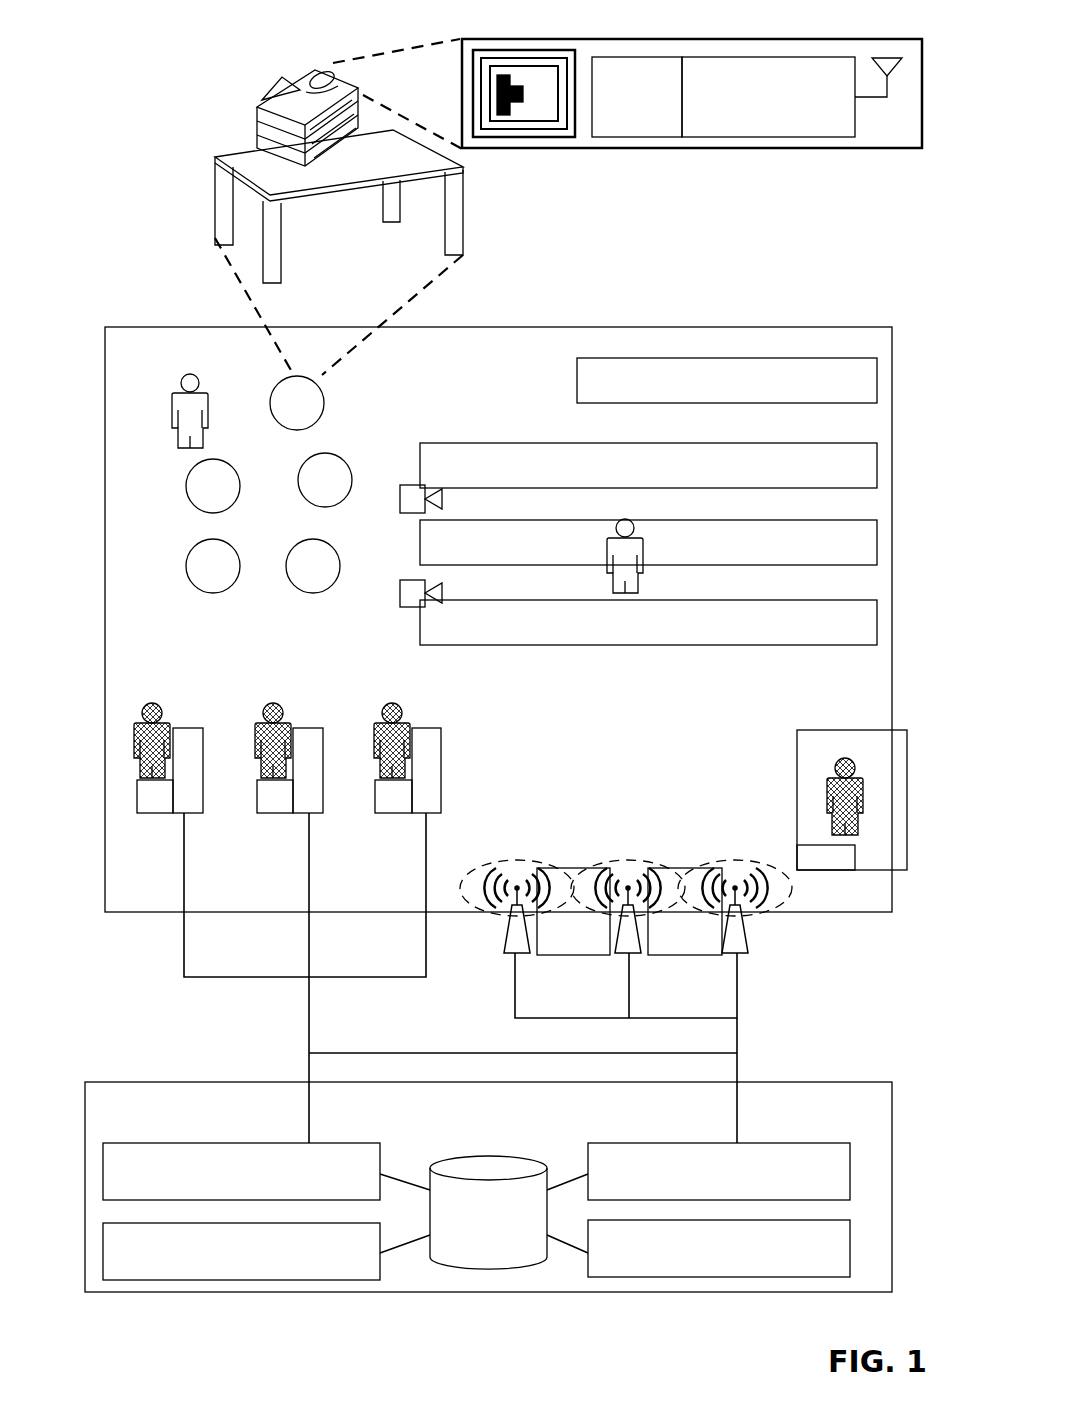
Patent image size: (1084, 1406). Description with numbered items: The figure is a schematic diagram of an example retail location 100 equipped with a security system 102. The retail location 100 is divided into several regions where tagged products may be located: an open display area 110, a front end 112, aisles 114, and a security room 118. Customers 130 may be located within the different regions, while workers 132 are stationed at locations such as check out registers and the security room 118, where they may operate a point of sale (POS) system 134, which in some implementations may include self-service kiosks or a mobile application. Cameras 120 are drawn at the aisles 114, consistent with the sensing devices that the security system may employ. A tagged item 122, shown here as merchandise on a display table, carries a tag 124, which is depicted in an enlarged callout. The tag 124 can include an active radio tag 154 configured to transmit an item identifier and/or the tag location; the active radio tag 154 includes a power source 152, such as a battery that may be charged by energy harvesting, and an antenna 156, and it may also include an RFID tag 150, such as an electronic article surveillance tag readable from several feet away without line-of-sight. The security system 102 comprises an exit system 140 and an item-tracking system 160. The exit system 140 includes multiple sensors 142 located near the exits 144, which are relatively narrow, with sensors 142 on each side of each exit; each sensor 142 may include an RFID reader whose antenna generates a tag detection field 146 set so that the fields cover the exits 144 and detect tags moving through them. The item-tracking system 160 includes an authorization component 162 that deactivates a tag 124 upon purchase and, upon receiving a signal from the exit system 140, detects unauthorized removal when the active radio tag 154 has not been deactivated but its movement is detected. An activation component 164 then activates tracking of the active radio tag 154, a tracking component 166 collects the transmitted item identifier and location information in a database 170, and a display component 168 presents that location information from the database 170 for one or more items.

The retail location 100 is at (170, 320).
The security system 102 is at (122, 292).
The open display area 110 is at (374, 358).
The front end 112 is at (208, 668).
The aisles 114 is at (386, 562).
The security room 118 is at (844, 740).
The camera 120 is at (400, 488).
The item 122 is at (262, 106).
The tag 124 is at (692, 401).
The customers 130 is at (198, 372).
The workers 132 is at (154, 705).
The point of sale (POS) system 134 is at (226, 720).
The exit system 140 is at (641, 772).
The sensors 142 is at (520, 955).
The exits 144 is at (576, 868).
The tag detection field 146 is at (518, 862).
The RFID tag 150 is at (541, 138).
The power source 152 is at (638, 138).
The active radio tag 154 is at (764, 138).
The antenna 156 is at (887, 100).
The item-tracking system 160 is at (120, 1082).
The authorization component 162 is at (245, 1143).
The activation component 164 is at (676, 1143).
The tracking component 166 is at (380, 1266).
The display component 168 is at (587, 1265).
The database 170 is at (445, 1162).